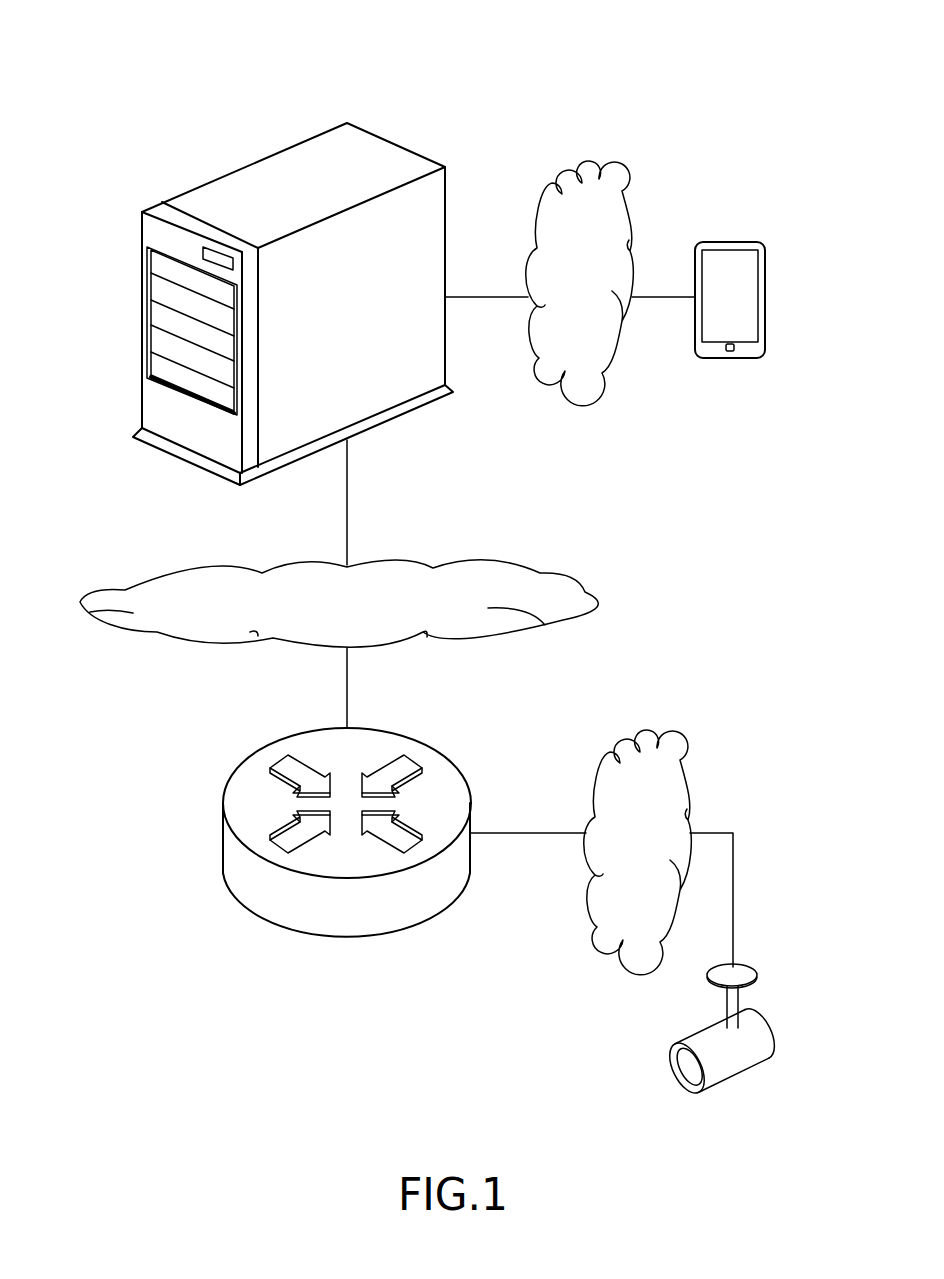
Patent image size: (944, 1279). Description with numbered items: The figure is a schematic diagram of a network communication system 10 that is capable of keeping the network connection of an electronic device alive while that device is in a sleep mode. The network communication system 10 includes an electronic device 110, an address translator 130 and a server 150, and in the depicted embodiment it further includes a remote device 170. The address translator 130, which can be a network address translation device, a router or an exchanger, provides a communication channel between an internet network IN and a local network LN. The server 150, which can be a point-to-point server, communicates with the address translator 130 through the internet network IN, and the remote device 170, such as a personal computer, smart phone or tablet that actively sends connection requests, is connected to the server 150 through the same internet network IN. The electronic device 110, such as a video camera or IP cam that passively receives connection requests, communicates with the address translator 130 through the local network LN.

The network communication system 10 is at (131, 80).
The electronic device 110 is at (766, 1043).
The address translator 130 is at (443, 753).
The server 150 is at (447, 175).
The remote device 170 is at (766, 266).
The internet network IN is at (622, 197).
The local network LN is at (691, 778).